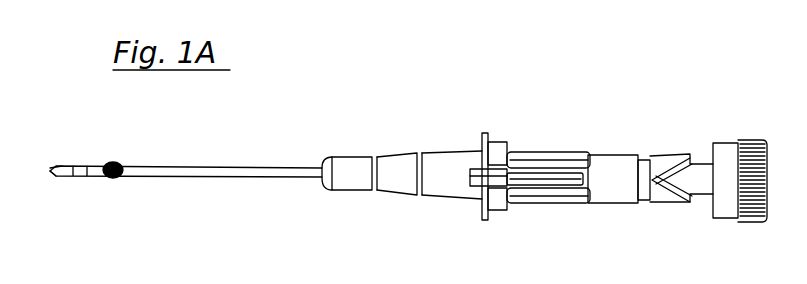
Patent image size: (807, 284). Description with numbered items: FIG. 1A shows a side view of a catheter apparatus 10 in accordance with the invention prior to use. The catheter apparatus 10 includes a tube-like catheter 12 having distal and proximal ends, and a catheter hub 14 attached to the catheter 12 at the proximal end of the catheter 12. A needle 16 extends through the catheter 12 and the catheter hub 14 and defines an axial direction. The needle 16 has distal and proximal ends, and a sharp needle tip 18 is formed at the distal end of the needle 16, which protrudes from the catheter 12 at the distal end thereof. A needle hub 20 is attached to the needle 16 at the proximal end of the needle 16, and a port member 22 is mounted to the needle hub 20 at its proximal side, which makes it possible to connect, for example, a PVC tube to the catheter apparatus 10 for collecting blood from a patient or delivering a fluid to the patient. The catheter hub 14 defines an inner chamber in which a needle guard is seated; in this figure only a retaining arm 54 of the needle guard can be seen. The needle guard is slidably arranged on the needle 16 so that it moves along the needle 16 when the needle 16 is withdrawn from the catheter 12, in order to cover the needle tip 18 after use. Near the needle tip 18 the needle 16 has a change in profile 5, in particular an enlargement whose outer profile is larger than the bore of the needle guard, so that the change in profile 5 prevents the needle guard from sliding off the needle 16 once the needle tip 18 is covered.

The catheter apparatus 10 is at (404, 104).
The catheter 12 is at (144, 179).
The catheter hub 14 is at (398, 194).
The needle 16 is at (70, 166).
The needle tip 18 is at (52, 169).
The change in profile 5 is at (112, 178).
The retaining arm 54 is at (473, 187).
The needle hub 20 is at (600, 204).
The port member 22 is at (724, 219).